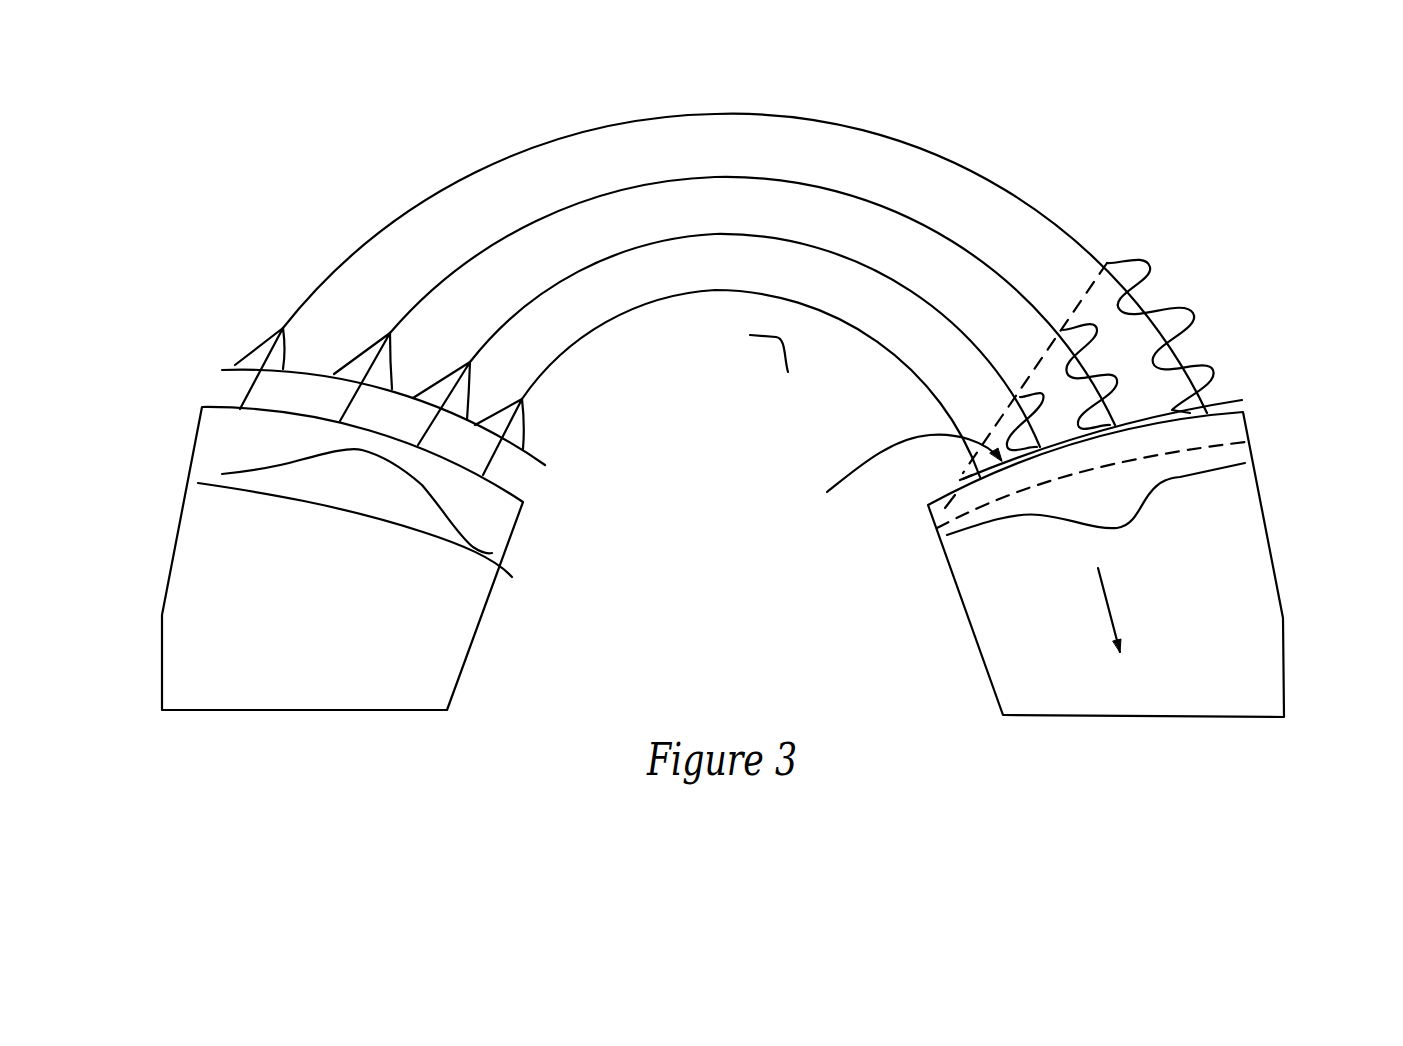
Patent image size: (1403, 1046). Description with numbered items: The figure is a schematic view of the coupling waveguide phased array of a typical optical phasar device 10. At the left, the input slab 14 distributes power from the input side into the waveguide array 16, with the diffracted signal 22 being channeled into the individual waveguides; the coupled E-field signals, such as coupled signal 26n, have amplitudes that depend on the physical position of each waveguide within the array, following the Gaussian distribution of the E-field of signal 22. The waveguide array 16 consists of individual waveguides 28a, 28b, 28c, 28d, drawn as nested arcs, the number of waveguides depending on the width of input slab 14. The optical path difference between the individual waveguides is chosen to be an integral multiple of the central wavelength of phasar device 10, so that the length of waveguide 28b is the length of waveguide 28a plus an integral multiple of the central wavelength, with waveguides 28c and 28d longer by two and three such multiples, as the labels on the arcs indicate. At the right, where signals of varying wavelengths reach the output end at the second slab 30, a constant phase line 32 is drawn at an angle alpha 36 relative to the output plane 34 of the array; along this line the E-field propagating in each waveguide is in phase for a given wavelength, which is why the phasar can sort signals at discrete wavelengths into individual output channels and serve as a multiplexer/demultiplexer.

The phasar device 10 is at (572, 528).
The input slab 14 is at (227, 560).
The waveguide array 16 is at (426, 156).
The diffracted signal 22 is at (278, 472).
The coupled E-field signal 26n is at (395, 336).
The individual waveguide 28a is at (857, 326).
The individual waveguide 28b is at (903, 286).
The individual waveguide 28c is at (935, 235).
The individual waveguide 28d is at (972, 174).
The second optical element 30 is at (1178, 607).
The constant phase line 32 is at (1118, 252).
The output plane 34 is at (1232, 402).
The angle alpha 36 is at (966, 477).